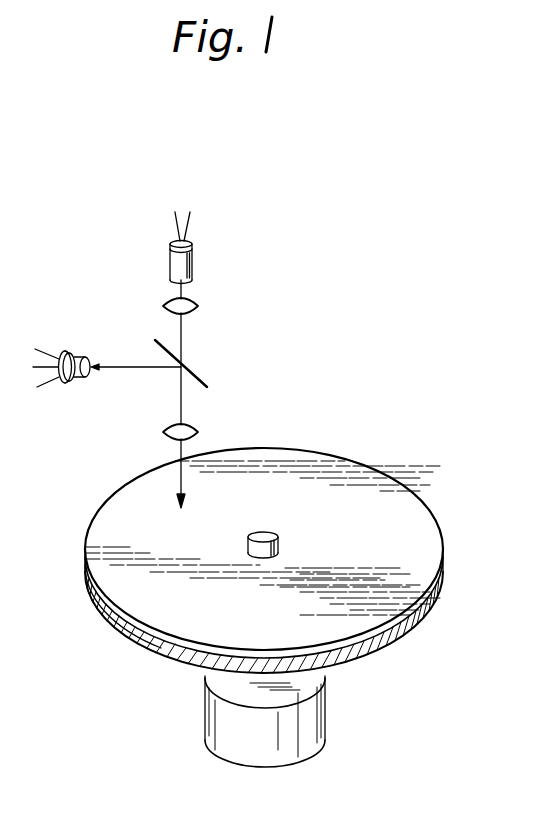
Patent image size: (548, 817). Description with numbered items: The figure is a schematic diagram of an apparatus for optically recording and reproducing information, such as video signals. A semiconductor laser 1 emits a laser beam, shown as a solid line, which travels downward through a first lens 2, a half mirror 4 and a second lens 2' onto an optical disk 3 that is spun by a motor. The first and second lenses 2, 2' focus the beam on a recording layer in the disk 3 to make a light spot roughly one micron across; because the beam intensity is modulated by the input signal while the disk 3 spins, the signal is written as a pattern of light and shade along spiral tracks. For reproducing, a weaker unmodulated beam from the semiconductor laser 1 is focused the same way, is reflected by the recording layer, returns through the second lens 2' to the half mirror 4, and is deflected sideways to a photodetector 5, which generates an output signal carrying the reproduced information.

The semiconductor laser 1 is at (192, 272).
The first lens 2 is at (204, 308).
The second lens 2' is at (207, 421).
The optical disk 3 is at (423, 492).
The half mirror 4 is at (163, 345).
The photodetector 5 is at (70, 384).